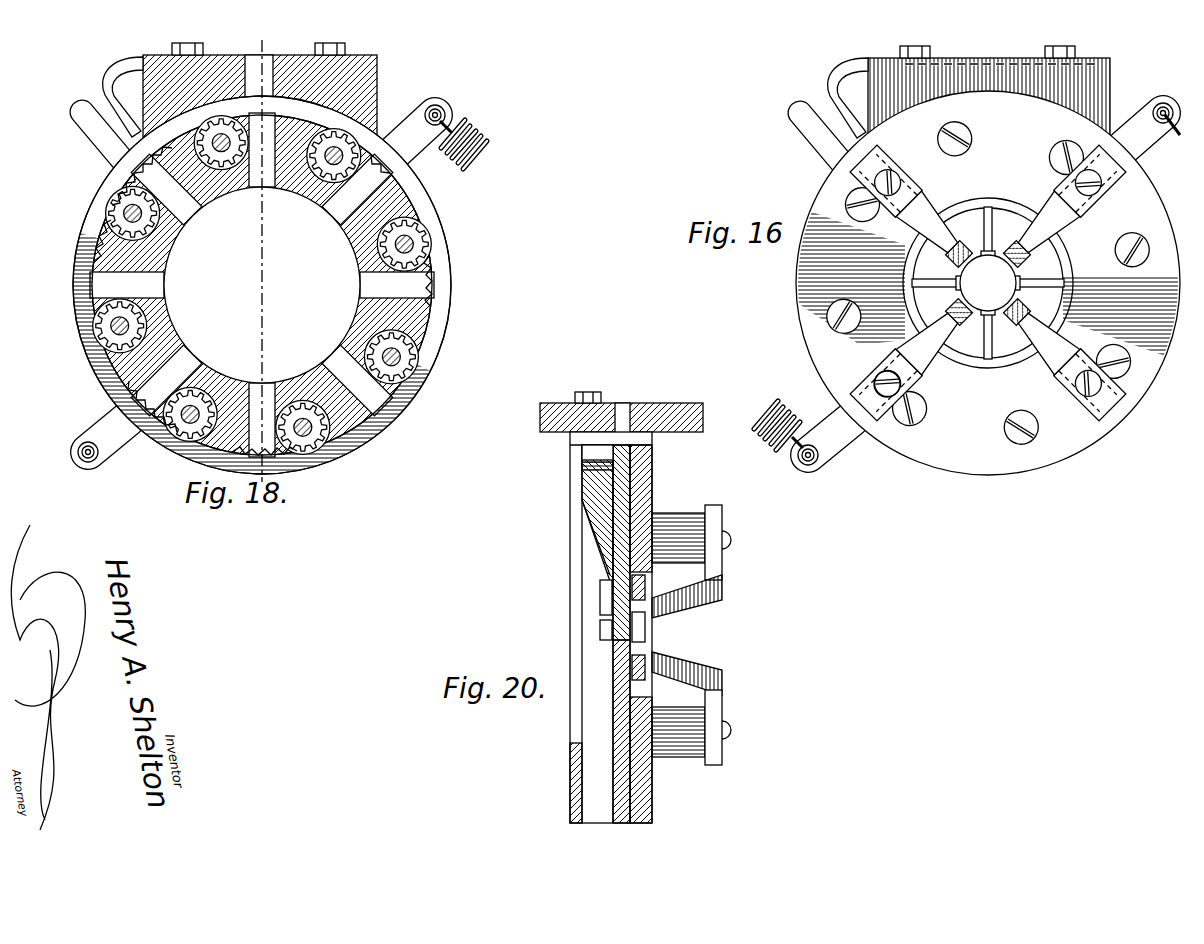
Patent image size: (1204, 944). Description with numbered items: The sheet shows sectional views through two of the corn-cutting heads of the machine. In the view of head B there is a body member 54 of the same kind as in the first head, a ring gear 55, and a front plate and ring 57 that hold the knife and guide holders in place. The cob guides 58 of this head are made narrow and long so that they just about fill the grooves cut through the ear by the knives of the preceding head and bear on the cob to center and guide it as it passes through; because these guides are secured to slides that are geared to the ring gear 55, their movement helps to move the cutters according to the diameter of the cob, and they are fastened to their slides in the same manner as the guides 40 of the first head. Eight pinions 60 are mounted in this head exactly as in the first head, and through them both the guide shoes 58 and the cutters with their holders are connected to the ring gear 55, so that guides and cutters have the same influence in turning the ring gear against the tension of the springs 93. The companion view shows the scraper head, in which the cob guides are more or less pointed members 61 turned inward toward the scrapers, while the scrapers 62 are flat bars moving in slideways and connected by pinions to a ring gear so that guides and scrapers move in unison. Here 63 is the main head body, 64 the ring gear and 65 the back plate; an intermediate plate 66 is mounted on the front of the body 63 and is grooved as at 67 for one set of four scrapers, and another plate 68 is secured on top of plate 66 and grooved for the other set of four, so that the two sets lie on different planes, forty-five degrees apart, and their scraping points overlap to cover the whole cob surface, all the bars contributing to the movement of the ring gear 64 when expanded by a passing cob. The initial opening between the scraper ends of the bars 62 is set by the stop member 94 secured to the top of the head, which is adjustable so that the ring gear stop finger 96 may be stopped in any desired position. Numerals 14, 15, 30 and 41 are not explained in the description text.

In FIG. 18, the center line 14 is at (262, 48).
In FIG. 18, the pivot lug 15 is at (445, 112).
In FIG. 16, the pivot lug 15 is at (989, 284).
In FIG. 20, the flange head 30 is at (710, 410).
In FIG. 16, the guide 40 is at (913, 380).
In FIG. 16, the arm screw 41 is at (880, 378).
In FIG. 18, the body member 54 is at (433, 303).
In FIG. 18, the ring gear 55 is at (441, 328).
In FIG. 16, the front plate and ring 57 is at (989, 98).
In FIG. 16, the cob guides 58 is at (986, 246).
In FIG. 18, the pinions 60 is at (112, 214).
In FIG. 20, the pointed members 61 is at (680, 608).
In FIG. 20, the scrapers 62 is at (637, 610).
In FIG. 20, the main head body 63 is at (598, 500).
In FIG. 20, the ring gear 64 is at (582, 455).
In FIG. 20, the back plate 65 is at (585, 475).
In FIG. 20, the intermediate plate 66 is at (620, 520).
In FIG. 20, the grooves 67 is at (615, 640).
In FIG. 20, the plate 68 is at (640, 475).
In FIG. 18, the springs 93 is at (470, 150).
In FIG. 16, the springs 93 is at (778, 452).
In FIG. 18, the stop member 94 is at (108, 82).
In FIG. 16, the stop member 94 is at (830, 78).
In FIG. 18, the ring gear stop finger 96 is at (95, 132).
In FIG. 16, the ring gear stop finger 96 is at (822, 130).